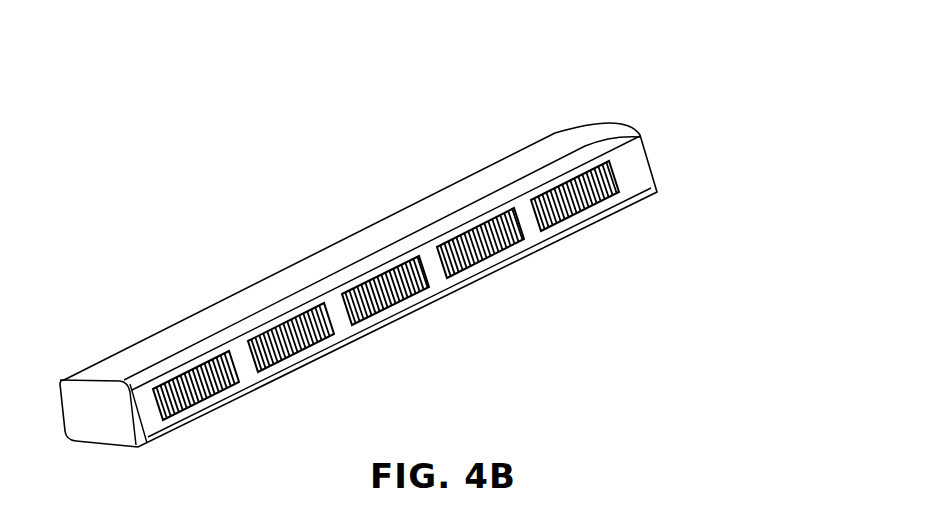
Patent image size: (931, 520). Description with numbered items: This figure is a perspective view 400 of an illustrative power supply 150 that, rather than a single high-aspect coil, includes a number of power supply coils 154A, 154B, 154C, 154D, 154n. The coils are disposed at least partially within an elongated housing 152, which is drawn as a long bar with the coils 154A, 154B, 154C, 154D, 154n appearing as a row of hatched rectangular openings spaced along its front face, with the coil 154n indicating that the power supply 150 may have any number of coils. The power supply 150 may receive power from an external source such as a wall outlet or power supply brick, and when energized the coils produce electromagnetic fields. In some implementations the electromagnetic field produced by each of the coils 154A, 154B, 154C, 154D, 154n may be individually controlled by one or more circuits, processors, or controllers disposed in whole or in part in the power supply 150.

The view of light bar assembly 400 is at (677, 73).
The power supply 150 is at (405, 282).
The housing 152 is at (335, 263).
The power supply coil 154A is at (203, 389).
The power supply coil 154B is at (295, 342).
The power supply coil 154C is at (389, 299).
The power supply coil 154D is at (484, 252).
The power supply coil 154n is at (573, 204).